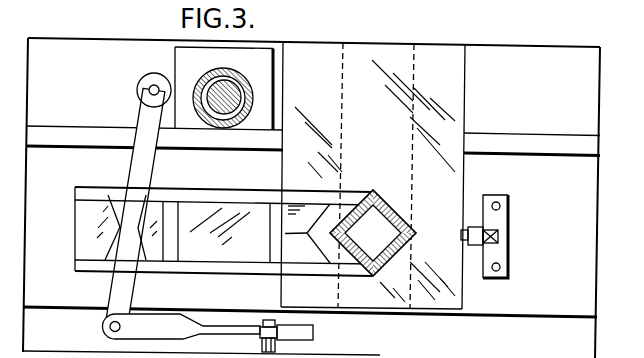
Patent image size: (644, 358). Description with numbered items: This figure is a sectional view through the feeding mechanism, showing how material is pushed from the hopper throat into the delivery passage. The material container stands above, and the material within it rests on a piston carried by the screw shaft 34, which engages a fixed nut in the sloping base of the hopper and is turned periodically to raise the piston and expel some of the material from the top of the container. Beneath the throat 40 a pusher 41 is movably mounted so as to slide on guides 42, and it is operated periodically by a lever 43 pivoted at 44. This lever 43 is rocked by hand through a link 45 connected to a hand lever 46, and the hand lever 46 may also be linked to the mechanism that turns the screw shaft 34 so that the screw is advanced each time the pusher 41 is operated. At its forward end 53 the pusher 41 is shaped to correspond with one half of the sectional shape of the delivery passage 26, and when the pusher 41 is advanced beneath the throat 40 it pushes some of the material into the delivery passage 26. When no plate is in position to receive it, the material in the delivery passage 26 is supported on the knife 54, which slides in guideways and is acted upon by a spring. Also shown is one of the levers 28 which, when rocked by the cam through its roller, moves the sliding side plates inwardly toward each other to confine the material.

The delivery passage 26 is at (385, 222).
The lever 28 is at (475, 237).
The screw shaft 34 is at (216, 80).
The throat 40 is at (321, 229).
The pusher 41 is at (92, 222).
The guides 42 is at (277, 207).
The lever 43 is at (143, 165).
The pivot 44 is at (150, 89).
The link 45 is at (153, 328).
The hand lever 46 is at (313, 341).
The forward end 53 is at (316, 248).
The knife 54 is at (342, 139).